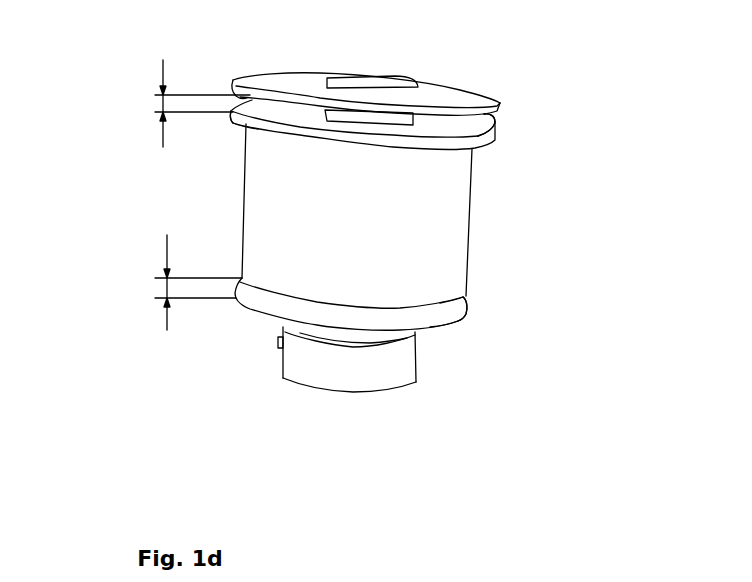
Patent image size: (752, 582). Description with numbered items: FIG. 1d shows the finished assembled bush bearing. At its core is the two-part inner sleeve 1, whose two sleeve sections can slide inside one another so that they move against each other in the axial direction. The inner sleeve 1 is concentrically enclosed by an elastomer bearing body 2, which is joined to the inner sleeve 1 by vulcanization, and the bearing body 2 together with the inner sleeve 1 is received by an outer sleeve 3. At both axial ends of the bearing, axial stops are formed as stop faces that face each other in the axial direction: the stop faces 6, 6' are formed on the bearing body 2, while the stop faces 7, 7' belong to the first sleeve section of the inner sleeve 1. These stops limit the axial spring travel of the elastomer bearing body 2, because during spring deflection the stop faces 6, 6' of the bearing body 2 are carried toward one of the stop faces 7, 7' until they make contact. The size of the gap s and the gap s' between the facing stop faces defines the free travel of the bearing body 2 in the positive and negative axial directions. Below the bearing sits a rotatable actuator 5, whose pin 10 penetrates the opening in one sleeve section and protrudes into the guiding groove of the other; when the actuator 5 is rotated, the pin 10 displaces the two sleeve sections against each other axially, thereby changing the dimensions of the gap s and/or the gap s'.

The inner sleeve 1 is at (405, 87).
The elastomer bearing body 2 is at (443, 127).
The outer sleeve 3 is at (417, 198).
The rotatable actuator 5 is at (332, 373).
The stop face 6 is at (211, 146).
The stop face 7 is at (522, 139).
The stop face 6' is at (501, 328).
The stop face 7' is at (307, 317).
The pin 10 is at (282, 345).
The gap s is at (154, 101).
The gap s' is at (159, 282).